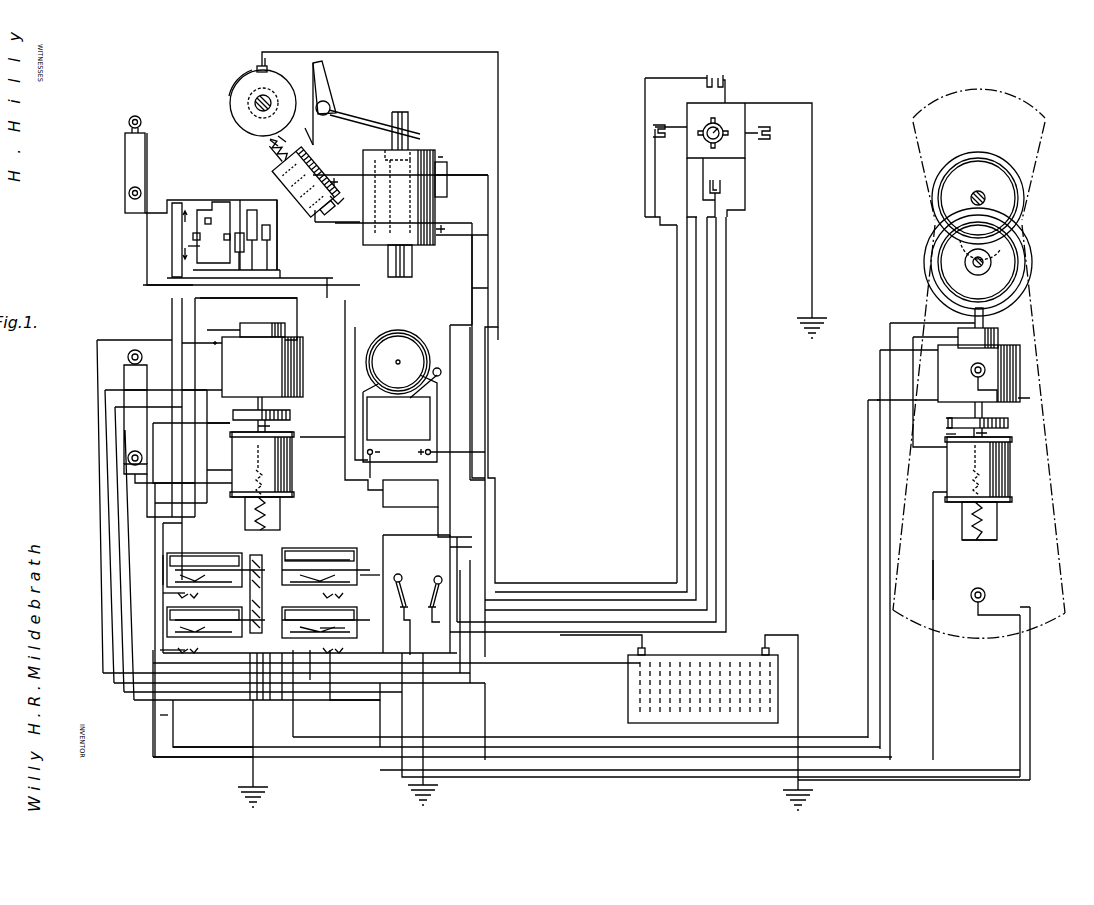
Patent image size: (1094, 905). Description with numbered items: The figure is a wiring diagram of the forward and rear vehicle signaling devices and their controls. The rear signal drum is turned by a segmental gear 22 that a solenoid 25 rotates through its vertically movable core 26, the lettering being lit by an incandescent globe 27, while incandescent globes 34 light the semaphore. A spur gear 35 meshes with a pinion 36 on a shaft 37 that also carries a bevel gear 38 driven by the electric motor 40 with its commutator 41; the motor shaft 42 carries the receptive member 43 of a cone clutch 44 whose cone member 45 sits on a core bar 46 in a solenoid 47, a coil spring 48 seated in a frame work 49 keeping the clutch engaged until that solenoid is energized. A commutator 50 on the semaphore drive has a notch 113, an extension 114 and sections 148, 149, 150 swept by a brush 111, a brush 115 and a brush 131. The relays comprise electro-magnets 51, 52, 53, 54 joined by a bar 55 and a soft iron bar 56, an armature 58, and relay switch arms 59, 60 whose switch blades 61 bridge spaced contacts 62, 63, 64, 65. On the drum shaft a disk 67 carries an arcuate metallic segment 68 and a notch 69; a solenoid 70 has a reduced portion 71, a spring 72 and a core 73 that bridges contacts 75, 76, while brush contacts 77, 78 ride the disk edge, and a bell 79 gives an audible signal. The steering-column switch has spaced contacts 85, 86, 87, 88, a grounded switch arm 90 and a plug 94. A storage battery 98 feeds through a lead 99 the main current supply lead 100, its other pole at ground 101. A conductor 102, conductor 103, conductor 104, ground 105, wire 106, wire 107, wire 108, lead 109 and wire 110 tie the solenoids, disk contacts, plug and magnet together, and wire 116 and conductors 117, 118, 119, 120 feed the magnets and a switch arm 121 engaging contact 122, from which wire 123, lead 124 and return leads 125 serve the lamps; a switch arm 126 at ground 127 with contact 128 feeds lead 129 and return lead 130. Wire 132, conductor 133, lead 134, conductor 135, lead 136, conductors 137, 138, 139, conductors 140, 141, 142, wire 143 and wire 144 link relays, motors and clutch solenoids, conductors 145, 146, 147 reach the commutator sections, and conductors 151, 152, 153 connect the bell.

The segmental gear 22 is at (322, 70).
The solenoid 25 is at (425, 160).
The vertically movable core 26 is at (404, 118).
The incandescent globe 27 is at (140, 120).
The incandescent globes 34 is at (986, 368).
The spur gear 35 is at (1020, 198).
The pinion 36 is at (1000, 246).
The shaft 37 is at (978, 270).
The bevel gear 38 is at (1015, 264).
The electric motor 40 is at (621, 369).
The commutator 41 is at (998, 338).
The motor shaft 42 is at (983, 410).
The receptive member of cone clutch 43 is at (948, 423).
The cone clutch 44 is at (1008, 423).
The cone member of clutch 45 is at (960, 434).
The core bar 46 is at (985, 434).
The solenoid 47 is at (621, 467).
The coil spring 48 is at (983, 518).
The frame work 49 is at (978, 541).
The commutator 50 is at (214, 210).
The electro-magnet 51 is at (205, 551).
The electro-magnet 52 is at (340, 551).
The electro-magnet 53 is at (216, 619).
The electro-magnet 54 is at (325, 620).
The bar 55 is at (390, 549).
The soft iron bar 56 is at (167, 569).
The armature 58 is at (315, 559).
The relay switch arm 59 is at (258, 585).
The relay switch arm 60 is at (325, 627).
The switch blades 61 is at (178, 553).
The spaced contacts 62 is at (190, 597).
The spaced contacts 63 is at (345, 598).
The spaced contacts 64 is at (185, 651).
The spaced contacts 65 is at (312, 661).
The disk 67 is at (242, 120).
The arcuate metallic segment 68 is at (240, 86).
The notch 69 is at (330, 106).
The solenoid 70 is at (318, 167).
The reduced portion of core 71 is at (268, 144).
The spring 72 is at (286, 147).
The core 73 is at (310, 130).
The contact 75 is at (342, 191).
The contact 76 is at (326, 224).
The brush contact 77 is at (270, 64).
The brush contact 78 is at (260, 66).
The bell 79 is at (398, 336).
The spaced contacts 85 is at (648, 130).
The spaced contacts 86 is at (728, 74).
The spaced contacts 87 is at (770, 125).
The spaced contacts 88 is at (722, 193).
The switch arm 90 is at (708, 125).
The plug 94 is at (718, 126).
The storage battery 98 is at (708, 659).
The lead 99 is at (605, 636).
The main current supply lead 100 is at (485, 439).
The ground 101 is at (812, 791).
The conductor 102 is at (480, 232).
The conductor 103 is at (447, 197).
The conductor 104 is at (461, 246).
The ground 105 is at (816, 322).
The wire 106 is at (448, 177).
The wire 107 is at (366, 128).
The wire 108 is at (727, 322).
The lead 109 is at (487, 649).
The wire 110 is at (185, 706).
The brush 111 is at (193, 230).
The notch 113 is at (190, 248).
The extension 114 is at (226, 298).
The brush 115 is at (206, 218).
The wire 116 is at (227, 234).
The conductor 117 is at (677, 391).
The conductor 118 is at (687, 420).
The conductor 119 is at (707, 442).
The conductor 120 is at (717, 474).
The switch arm 121 is at (432, 582).
The contact 122 is at (405, 575).
The wire 123 is at (410, 494).
The lead 124 is at (410, 717).
The return leads 125 is at (1020, 691).
The switch arm 126 is at (440, 601).
The ground 127 is at (430, 791).
The contact 128 is at (445, 581).
The lead 129 is at (440, 509).
The return lead 130 is at (125, 160).
The brush 131 is at (252, 210).
The wire 132 is at (270, 771).
The conductor 133 is at (250, 726).
The lead 134 is at (240, 691).
The conductor 135 is at (153, 736).
The lead 136 is at (385, 771).
The conductor 137 is at (930, 548).
The conductor 138 is at (103, 673).
The conductor 139 is at (296, 700).
The conductors 140 is at (868, 400).
The conductor 141 is at (97, 530).
The conductors 142 is at (210, 763).
The wire 143 is at (332, 671).
The wire 144 is at (160, 712).
The conductor 145 is at (345, 461).
The conductor 146 is at (345, 441).
The conductor 147 is at (172, 319).
The commutator section 148 is at (244, 242).
The commutator section 149 is at (243, 261).
The commutator section 150 is at (270, 232).
The conductor 151 is at (460, 452).
The conductor 152 is at (360, 313).
The conductor 153 is at (378, 483).